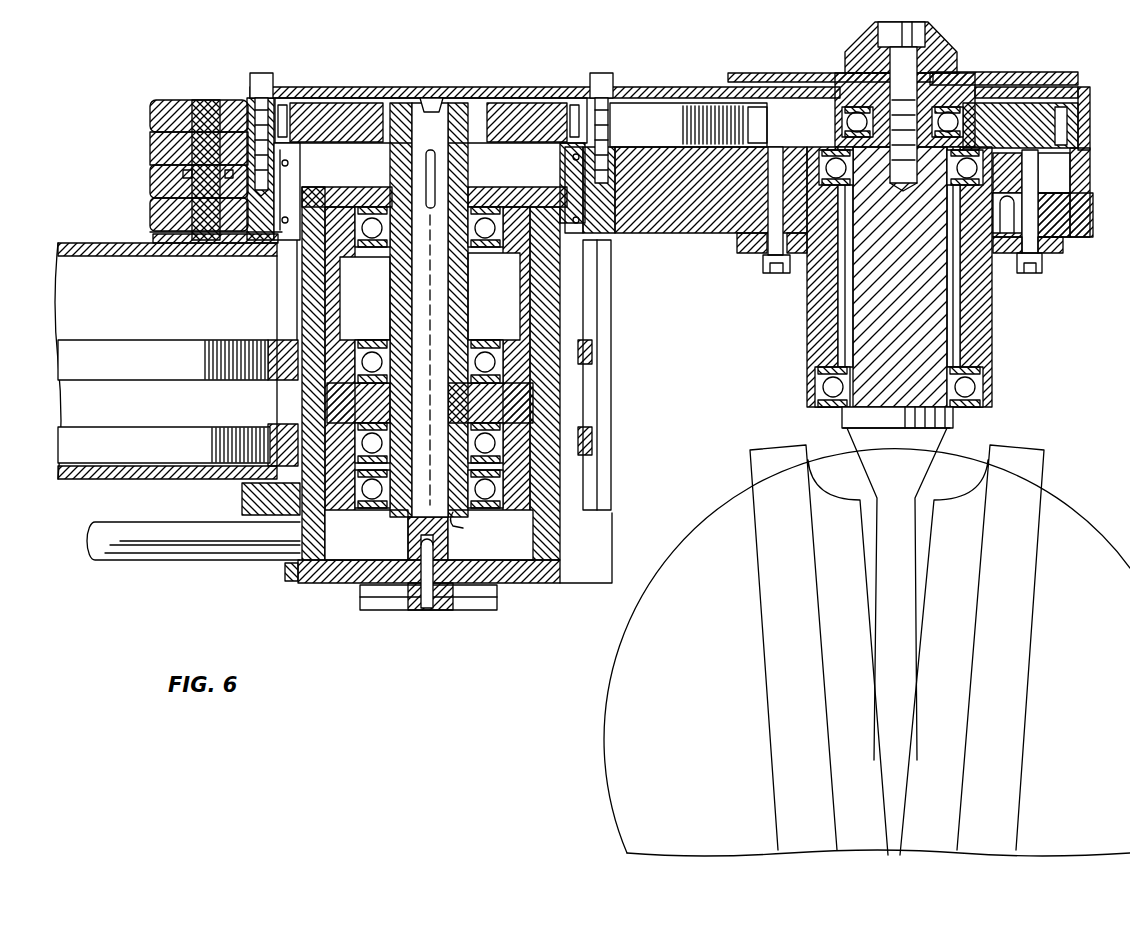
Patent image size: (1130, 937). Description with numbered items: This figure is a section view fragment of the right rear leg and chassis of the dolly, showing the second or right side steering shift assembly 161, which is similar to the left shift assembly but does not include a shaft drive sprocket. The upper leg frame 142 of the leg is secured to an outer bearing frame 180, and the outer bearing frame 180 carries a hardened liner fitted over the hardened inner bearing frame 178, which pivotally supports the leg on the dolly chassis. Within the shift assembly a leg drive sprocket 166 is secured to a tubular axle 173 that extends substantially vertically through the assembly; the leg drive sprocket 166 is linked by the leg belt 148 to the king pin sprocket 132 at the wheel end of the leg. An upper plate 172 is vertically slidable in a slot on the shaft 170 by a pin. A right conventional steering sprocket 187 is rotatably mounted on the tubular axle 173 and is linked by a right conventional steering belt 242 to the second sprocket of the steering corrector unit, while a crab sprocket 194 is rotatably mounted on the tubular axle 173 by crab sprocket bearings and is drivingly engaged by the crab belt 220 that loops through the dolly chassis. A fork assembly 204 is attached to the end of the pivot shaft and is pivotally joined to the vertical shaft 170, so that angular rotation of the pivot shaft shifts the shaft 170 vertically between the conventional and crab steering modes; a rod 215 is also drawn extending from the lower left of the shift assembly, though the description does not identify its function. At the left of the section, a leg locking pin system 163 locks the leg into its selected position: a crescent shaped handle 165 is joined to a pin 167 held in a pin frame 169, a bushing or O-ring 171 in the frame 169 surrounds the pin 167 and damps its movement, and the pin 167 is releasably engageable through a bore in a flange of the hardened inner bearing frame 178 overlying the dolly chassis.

The king pin sprocket 132 is at (755, 108).
The upper leg frame 142 is at (352, 87).
The leg belt 148 is at (640, 112).
The right side steering shift assembly 161 is at (245, 88).
The leg locking pin system 163 is at (170, 90).
The crescent shaped handle 165 is at (150, 107).
The leg drive sprocket 166 is at (520, 108).
The pin 167 is at (155, 150).
The pin frame 169 is at (150, 176).
The shaft 170 is at (405, 532).
The O-ring 171 is at (155, 210).
The upper plate 172 is at (355, 192).
The tubular axle 173 is at (458, 520).
The inner bearing frame 178 is at (108, 230).
The outer bearing frame 180 is at (292, 205).
The right conventional steering sprocket 187 is at (283, 338).
The crab sprocket 194 is at (272, 440).
The fork assembly 204 is at (497, 597).
The rod 215 is at (115, 565).
The crab belt 220 is at (108, 442).
The right conventional steering belt 242 is at (112, 348).